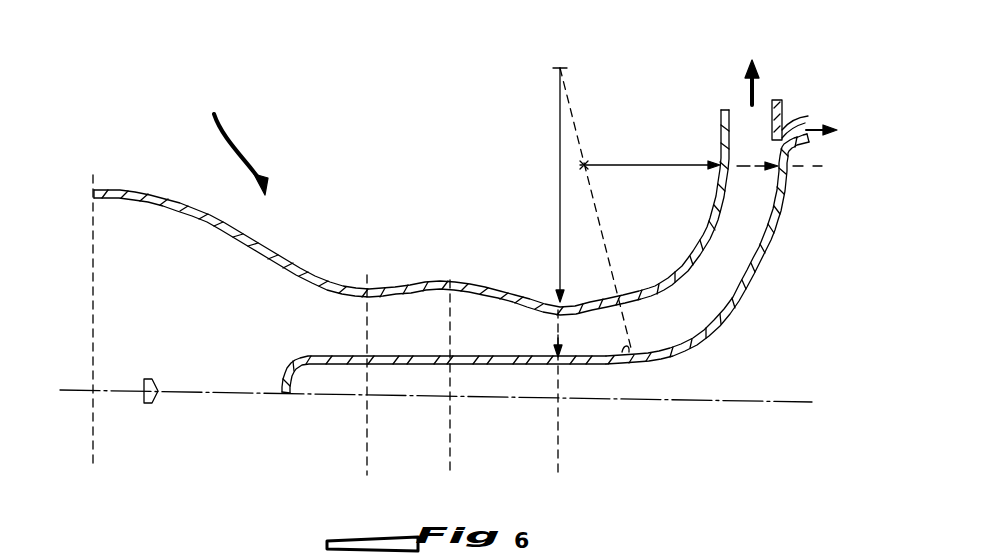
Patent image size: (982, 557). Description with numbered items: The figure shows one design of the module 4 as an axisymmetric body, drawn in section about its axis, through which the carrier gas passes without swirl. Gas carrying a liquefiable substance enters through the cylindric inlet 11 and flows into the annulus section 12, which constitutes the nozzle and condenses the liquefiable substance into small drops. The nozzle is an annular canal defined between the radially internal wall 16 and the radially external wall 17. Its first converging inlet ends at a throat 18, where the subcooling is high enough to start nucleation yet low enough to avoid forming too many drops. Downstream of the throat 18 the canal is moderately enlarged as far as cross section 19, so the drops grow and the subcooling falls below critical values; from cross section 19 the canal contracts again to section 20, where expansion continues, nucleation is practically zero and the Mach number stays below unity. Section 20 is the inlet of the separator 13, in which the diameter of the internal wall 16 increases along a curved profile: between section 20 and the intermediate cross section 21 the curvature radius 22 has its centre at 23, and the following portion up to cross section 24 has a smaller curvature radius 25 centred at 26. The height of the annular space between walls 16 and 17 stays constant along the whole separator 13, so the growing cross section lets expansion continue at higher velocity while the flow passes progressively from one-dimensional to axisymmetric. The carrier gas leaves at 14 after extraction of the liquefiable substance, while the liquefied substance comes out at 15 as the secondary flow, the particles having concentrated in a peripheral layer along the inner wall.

The module 4 is at (241, 145).
The cylindric inlet 11 is at (138, 291).
The annulus section (nozzle) 12 is at (356, 400).
The separator 13 is at (716, 356).
The carrier gas outlet 14 is at (757, 90).
The liquefied substance outlet 15 is at (812, 133).
The radially internal wall 16 is at (510, 365).
The radially external wall 17 is at (513, 289).
The throat 18 is at (368, 318).
The cross section 19 is at (453, 318).
The cross section (narrowing section) 20 is at (558, 340).
The intermediate cross section 21 is at (625, 350).
The curvature radius 22 is at (558, 200).
The centre of curvature 23 is at (560, 68).
The cross section 24 is at (795, 168).
The smaller curvature radius 25 is at (652, 164).
The centre of curvature 26 is at (588, 160).